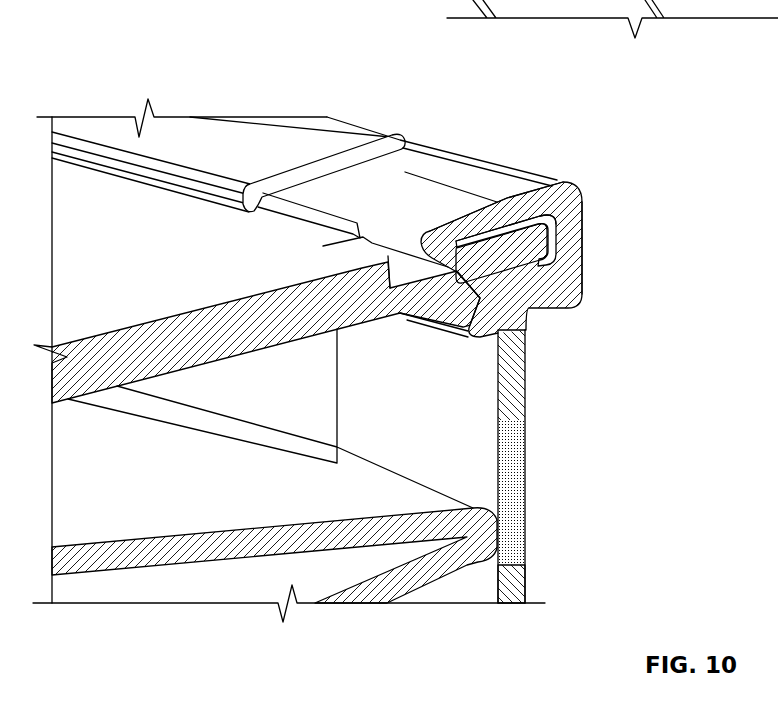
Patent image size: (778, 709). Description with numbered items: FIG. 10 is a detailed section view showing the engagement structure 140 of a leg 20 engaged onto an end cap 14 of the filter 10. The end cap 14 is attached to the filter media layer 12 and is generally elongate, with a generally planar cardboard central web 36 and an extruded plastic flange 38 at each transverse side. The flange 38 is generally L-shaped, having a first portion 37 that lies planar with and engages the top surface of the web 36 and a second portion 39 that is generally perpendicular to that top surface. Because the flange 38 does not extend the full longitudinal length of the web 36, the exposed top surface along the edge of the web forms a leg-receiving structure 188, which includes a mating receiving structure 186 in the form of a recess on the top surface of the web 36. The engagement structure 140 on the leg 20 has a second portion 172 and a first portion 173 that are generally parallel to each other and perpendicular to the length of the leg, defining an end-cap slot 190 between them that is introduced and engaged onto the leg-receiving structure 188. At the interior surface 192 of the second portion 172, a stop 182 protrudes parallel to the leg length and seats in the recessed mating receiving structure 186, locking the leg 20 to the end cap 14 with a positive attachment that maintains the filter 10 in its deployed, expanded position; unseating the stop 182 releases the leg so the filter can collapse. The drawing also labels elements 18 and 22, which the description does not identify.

The filter 10 is at (241, 645).
The filter media layer 12 is at (330, 583).
The end cap 14 is at (170, 135).
The base 18 is at (512, 571).
The leg 20 is at (470, 473).
The rim 22 is at (418, 163).
The central web 36 is at (147, 217).
The first portion 37 is at (292, 157).
The flange 38 is at (258, 127).
The second portion 39 is at (243, 395).
The engagement structure 140 is at (538, 336).
The second portion 172 is at (498, 203).
The first portion 173 is at (553, 300).
The stop 182 is at (540, 256).
The mating receiving structure 186 is at (527, 323).
The leg-receiving structure 188 is at (545, 218).
The end-cap slot 190 is at (547, 240).
The interior surface 192 is at (477, 240).